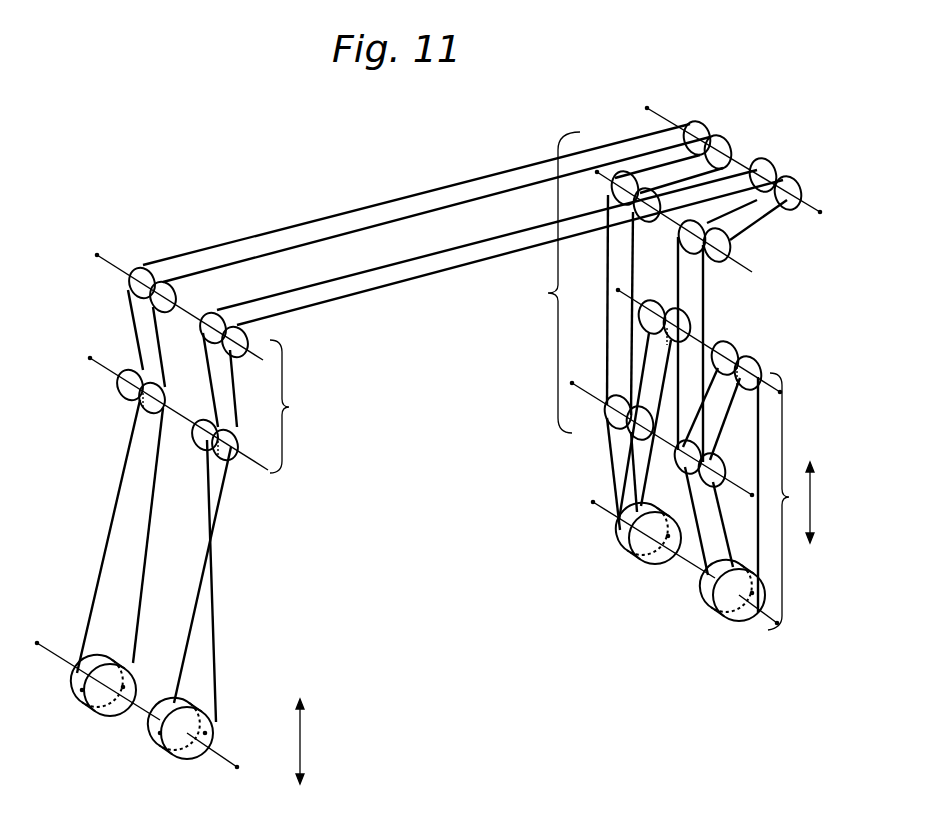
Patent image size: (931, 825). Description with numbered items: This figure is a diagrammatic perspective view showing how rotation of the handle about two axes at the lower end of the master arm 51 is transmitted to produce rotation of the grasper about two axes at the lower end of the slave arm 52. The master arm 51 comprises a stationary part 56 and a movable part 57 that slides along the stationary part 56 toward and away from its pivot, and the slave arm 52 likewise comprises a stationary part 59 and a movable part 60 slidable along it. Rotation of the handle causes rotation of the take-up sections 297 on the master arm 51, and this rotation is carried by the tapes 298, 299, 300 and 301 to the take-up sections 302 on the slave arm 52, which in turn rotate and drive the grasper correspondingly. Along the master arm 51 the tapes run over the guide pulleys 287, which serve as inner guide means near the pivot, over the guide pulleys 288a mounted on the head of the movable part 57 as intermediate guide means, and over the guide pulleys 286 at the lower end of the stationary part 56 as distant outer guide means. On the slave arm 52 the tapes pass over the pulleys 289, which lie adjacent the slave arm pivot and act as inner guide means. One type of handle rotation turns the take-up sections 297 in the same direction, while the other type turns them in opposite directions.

The master arm 51 is at (550, 484).
The slave arm 52 is at (266, 554).
The stationary part 56 is at (546, 282).
The movable part 57 is at (791, 501).
The stationary part 59 is at (294, 406).
The movable part 60 is at (222, 740).
The guide pulleys 286 is at (638, 434).
The guide pulleys 287 is at (706, 123).
The guide pulleys 288a is at (668, 309).
The pulleys 289 is at (132, 290).
The take-up sections 297 is at (708, 607).
The tape 298 is at (431, 276).
The tape 299 is at (533, 229).
The tape 300 is at (366, 226).
The tape 301 is at (472, 178).
The take-up sections 302 is at (100, 660).